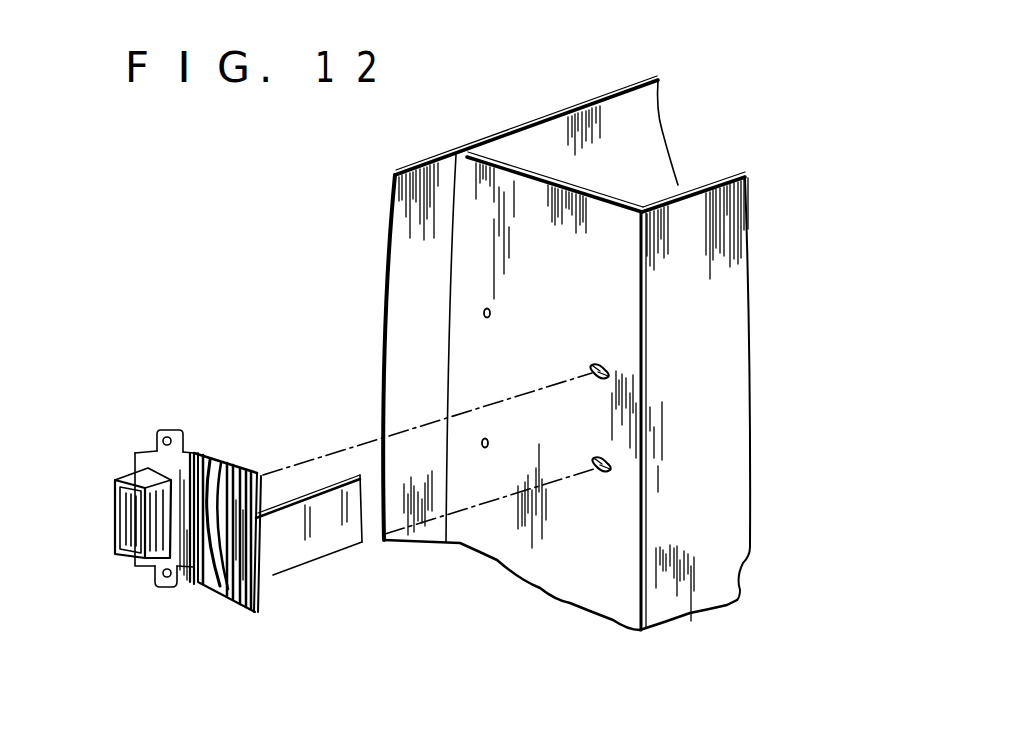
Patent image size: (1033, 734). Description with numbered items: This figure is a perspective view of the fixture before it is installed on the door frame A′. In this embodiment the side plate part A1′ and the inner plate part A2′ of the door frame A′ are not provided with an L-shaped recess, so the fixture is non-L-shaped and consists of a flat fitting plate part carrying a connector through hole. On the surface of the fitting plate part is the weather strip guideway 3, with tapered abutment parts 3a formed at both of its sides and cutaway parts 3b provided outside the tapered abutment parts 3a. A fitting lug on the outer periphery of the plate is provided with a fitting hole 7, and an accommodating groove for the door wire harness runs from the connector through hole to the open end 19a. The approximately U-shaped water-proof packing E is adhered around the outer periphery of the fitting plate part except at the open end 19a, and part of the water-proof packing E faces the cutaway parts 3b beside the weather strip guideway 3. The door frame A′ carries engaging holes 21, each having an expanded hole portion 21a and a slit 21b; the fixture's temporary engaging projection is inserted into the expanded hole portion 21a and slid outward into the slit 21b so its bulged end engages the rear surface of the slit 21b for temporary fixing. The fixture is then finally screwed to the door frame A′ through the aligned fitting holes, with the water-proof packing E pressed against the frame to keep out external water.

The door frame A′ is at (455, 157).
The side plate part A1′ is at (473, 220).
The inner plate part A2′ is at (698, 217).
The engaging hole 21 is at (605, 364).
The expanded hole portion 21a is at (612, 373).
The slit 21b is at (593, 364).
The fitting hole 7 is at (160, 439).
The weather strip guideway 3 is at (187, 581).
The tapered abutment part 3a is at (259, 505).
The cutaway part 3b is at (230, 467).
The water-proof packing E is at (227, 467).
The open end 19a is at (222, 487).